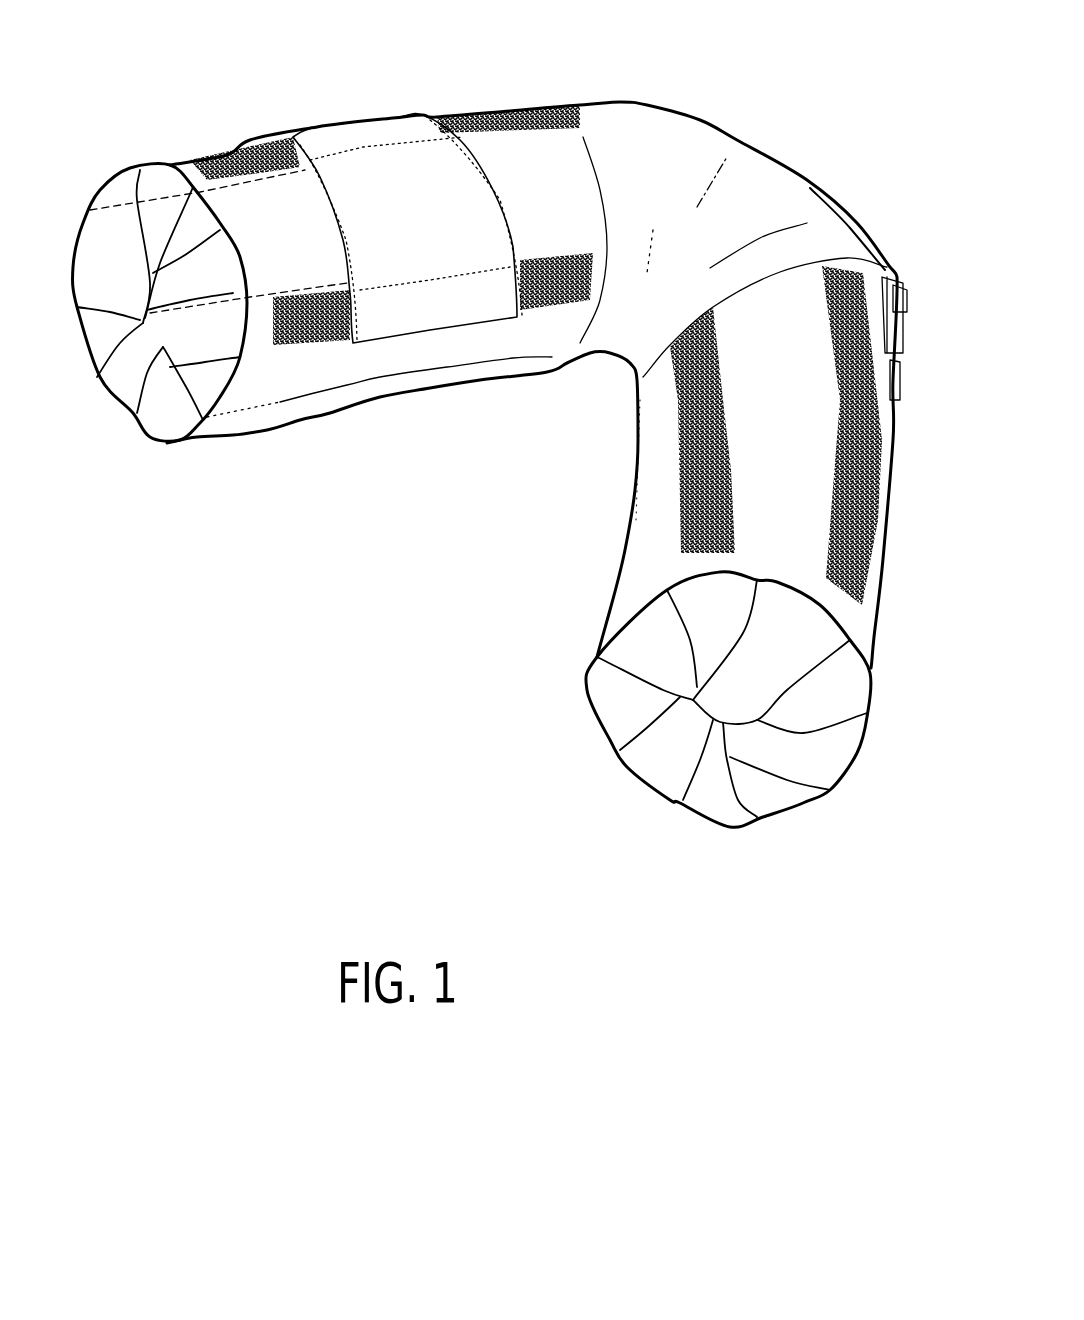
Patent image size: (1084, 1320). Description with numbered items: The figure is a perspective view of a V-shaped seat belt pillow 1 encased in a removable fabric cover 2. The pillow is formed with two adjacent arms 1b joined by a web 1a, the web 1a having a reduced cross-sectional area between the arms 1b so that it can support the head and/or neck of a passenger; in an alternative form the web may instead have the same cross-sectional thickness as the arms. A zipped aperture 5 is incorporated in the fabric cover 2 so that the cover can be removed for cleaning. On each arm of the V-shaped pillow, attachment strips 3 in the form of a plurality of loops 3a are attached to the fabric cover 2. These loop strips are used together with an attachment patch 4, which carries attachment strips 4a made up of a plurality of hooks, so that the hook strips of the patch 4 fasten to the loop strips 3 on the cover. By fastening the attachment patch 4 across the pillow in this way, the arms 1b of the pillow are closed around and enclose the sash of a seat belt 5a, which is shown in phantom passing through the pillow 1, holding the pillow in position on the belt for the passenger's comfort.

The seat belt pillow 1 is at (580, 423).
The web 1a is at (737, 142).
The arms 1b is at (262, 397).
The removable fabric cover 2 is at (613, 591).
The attachment strips 3 is at (843, 390).
The loops 3a is at (492, 110).
The attachment patch 4 is at (432, 231).
The attachment strips of hooks 4a is at (332, 143).
The zipped aperture 5 is at (883, 253).
The sash of a seat belt 5a is at (207, 312).